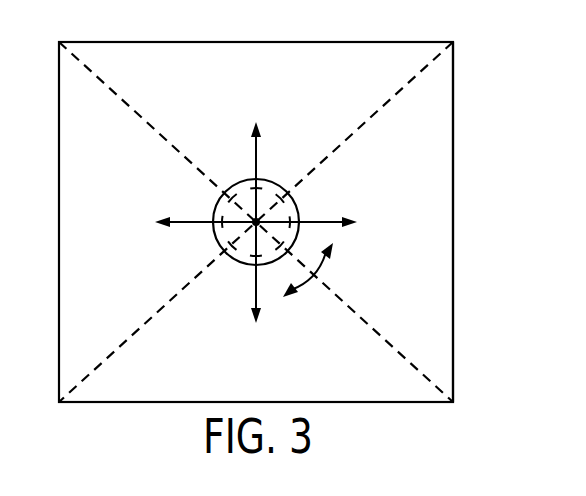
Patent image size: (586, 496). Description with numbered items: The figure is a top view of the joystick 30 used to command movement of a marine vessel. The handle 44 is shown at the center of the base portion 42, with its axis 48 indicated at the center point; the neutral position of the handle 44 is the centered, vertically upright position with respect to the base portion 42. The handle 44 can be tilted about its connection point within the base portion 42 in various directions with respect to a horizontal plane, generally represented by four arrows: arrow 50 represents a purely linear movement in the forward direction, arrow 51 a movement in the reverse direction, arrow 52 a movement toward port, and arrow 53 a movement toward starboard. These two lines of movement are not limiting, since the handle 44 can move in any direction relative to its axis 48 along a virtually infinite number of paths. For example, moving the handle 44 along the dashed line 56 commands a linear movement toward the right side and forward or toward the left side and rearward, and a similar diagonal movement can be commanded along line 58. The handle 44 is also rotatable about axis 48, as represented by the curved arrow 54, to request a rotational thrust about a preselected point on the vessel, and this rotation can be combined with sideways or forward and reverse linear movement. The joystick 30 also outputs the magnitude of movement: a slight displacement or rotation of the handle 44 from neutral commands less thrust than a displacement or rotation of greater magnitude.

The joystick 30 is at (463, 72).
The base portion 42 is at (437, 210).
The handle 44 is at (238, 182).
The axis 48 is at (256, 222).
The arrow 50 is at (258, 153).
The arrow 51 is at (255, 285).
The arrow 52 is at (188, 222).
The arrow 53 is at (323, 218).
The arrow 54 is at (318, 272).
The dashed line 56 is at (362, 120).
The line 58 is at (148, 120).